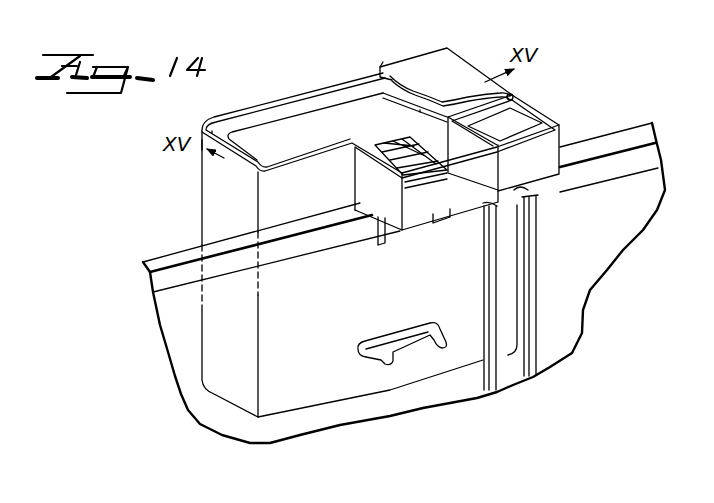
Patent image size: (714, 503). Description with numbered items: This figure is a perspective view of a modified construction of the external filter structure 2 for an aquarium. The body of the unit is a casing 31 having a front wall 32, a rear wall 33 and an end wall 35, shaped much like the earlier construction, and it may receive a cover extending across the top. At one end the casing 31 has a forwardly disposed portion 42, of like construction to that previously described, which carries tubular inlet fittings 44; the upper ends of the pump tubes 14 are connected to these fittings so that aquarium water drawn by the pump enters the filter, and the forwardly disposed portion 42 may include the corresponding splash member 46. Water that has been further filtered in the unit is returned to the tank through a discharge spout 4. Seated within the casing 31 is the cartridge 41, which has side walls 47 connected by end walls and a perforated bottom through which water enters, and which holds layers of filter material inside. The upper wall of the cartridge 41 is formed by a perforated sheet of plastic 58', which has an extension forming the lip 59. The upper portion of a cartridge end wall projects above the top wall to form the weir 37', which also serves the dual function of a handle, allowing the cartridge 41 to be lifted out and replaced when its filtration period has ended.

The filter structure 2 is at (195, 198).
The discharge spout 4 is at (423, 207).
The pump tubes 14 is at (527, 248).
The casing 31 is at (325, 63).
The front wall 32 is at (303, 177).
The rear wall 33 is at (415, 60).
The end wall 35 is at (220, 216).
The weir 37' is at (440, 89).
The cartridge 41 is at (273, 120).
The forwardly disposed portion 42 is at (550, 143).
The tubular inlet fittings 44 is at (547, 190).
The splash member 46 is at (513, 123).
The side walls 47 is at (343, 117).
The perforated sheet of plastic 58' is at (406, 143).
The lip 59 is at (444, 180).